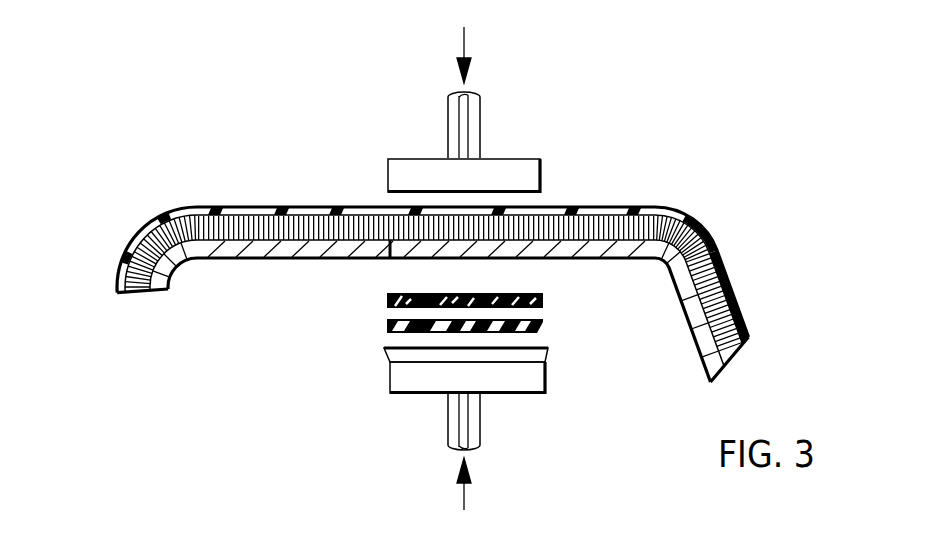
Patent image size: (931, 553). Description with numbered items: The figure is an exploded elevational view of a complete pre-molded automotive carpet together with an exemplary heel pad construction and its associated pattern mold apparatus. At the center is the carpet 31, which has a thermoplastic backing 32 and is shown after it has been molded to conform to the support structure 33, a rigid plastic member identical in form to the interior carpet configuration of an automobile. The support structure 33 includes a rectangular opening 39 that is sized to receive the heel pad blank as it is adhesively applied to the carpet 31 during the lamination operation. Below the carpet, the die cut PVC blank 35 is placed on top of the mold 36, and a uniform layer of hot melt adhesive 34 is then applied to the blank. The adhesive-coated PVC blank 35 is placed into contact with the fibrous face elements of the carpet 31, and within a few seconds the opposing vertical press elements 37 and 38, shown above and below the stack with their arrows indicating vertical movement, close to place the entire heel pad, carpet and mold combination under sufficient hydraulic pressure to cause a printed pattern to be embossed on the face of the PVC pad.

The carpet 31 is at (674, 213).
The thermoplastic backing 32 is at (741, 316).
The support structure 33 is at (690, 347).
The hot melt adhesive 34 is at (387, 300).
The die cut PVC blank 35 is at (388, 322).
The mold 36 is at (387, 354).
The vertical press element 37 is at (530, 174).
The vertical press element 38 is at (393, 383).
The rectangular opening 39 is at (544, 249).